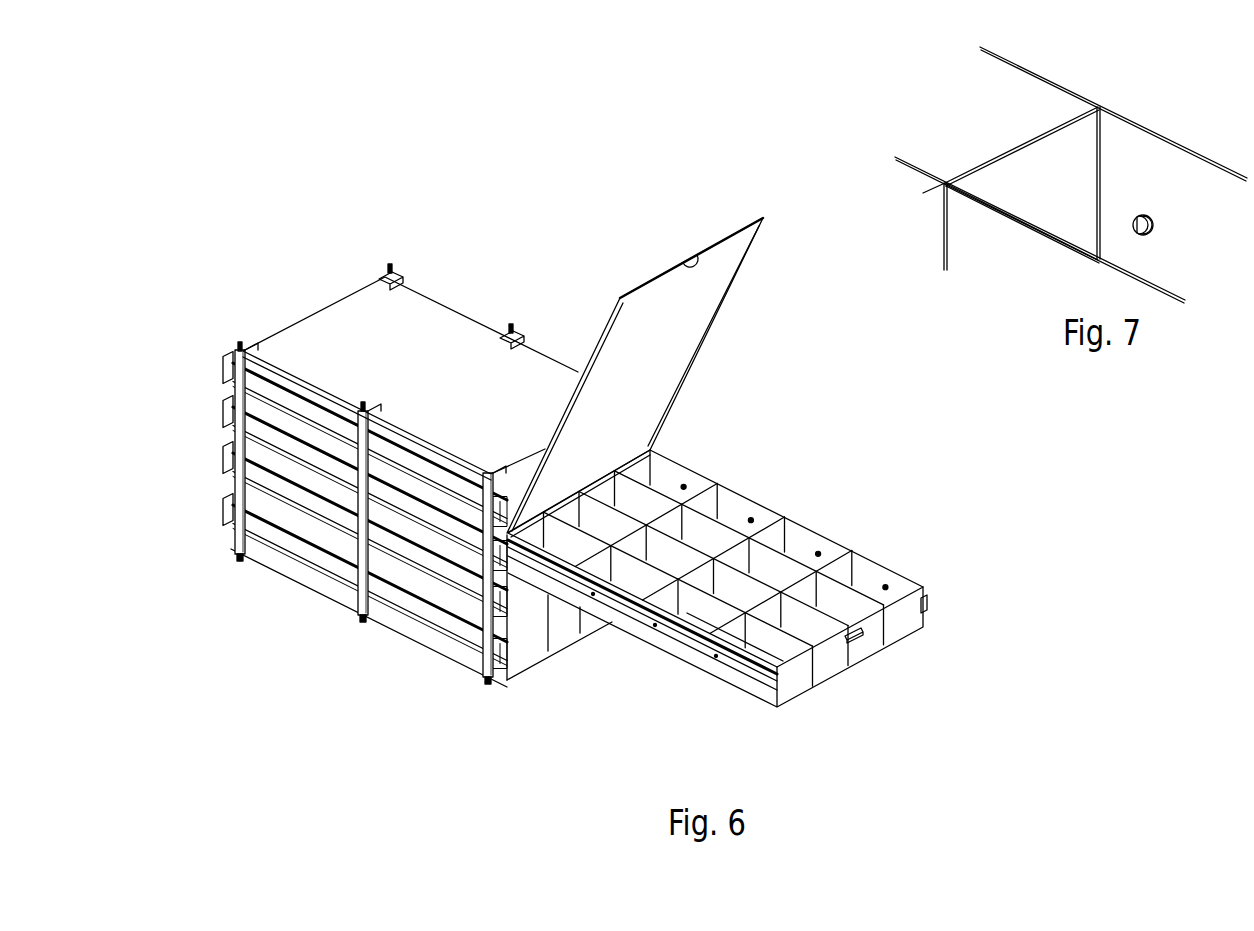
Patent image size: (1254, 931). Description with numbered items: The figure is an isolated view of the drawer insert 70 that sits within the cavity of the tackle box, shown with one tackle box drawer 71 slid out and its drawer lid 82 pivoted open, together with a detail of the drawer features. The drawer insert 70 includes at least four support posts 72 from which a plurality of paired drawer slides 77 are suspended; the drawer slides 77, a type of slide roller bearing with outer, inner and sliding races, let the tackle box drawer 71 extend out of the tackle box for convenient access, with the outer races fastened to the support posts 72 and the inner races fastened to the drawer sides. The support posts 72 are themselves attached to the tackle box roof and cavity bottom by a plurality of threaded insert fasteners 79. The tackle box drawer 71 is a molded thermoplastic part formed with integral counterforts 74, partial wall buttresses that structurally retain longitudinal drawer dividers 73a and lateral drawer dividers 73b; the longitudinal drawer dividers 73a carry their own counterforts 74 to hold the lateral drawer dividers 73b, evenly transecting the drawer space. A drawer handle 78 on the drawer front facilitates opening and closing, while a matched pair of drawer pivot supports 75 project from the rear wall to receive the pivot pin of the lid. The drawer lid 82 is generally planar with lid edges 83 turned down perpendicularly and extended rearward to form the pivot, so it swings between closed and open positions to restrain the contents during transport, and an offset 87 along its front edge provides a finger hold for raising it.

In FIG. 6, the drawer insert 70 is at (290, 290).
In FIG. 6, the tackle box drawer 71 is at (560, 640).
In FIG. 7, the tackle box drawer 71 is at (1200, 247).
In FIG. 6, the support post 72 is at (400, 274).
In FIG. 6, the longitudinal drawer divider 73a is at (633, 575).
In FIG. 7, the longitudinal drawer divider 73a is at (1004, 214).
In FIG. 6, the lateral drawer divider 73b is at (665, 592).
In FIG. 7, the lateral drawer divider 73b is at (1004, 153).
In FIG. 7, the counterfort 74 is at (1098, 106).
In FIG. 6, the drawer pivot support 75 is at (441, 311).
In FIG. 6, the drawer slide 77 is at (262, 477).
In FIG. 6, the drawer handle 78 is at (862, 638).
In FIG. 6, the threaded insert fastener 79 is at (387, 266).
In FIG. 6, the drawer lid 82 is at (683, 347).
In FIG. 6, the lid edge 83 is at (727, 306).
In FIG. 6, the offset 87 is at (688, 257).